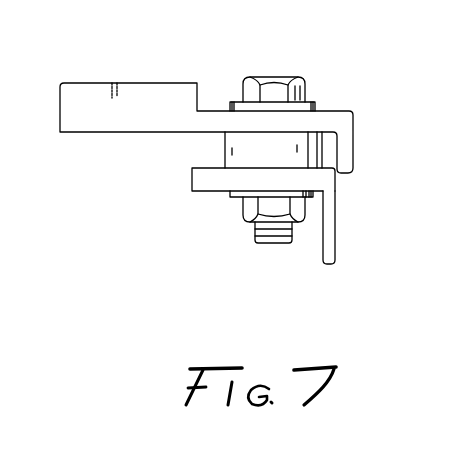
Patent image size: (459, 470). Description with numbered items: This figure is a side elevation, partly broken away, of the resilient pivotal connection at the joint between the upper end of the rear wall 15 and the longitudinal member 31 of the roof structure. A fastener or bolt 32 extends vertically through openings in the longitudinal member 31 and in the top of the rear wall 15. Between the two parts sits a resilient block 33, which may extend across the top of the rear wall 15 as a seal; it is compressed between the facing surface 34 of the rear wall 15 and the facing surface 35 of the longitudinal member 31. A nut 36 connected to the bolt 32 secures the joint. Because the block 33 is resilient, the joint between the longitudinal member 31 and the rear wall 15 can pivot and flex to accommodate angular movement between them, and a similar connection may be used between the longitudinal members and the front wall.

The rear wall 15 is at (330, 230).
The longitudinal member 31 is at (165, 97).
The bolt 32 is at (275, 88).
The resilient block 33 is at (232, 153).
The facing surface 34 is at (230, 193).
The facing surface 35 is at (295, 130).
The nut 36 is at (257, 208).